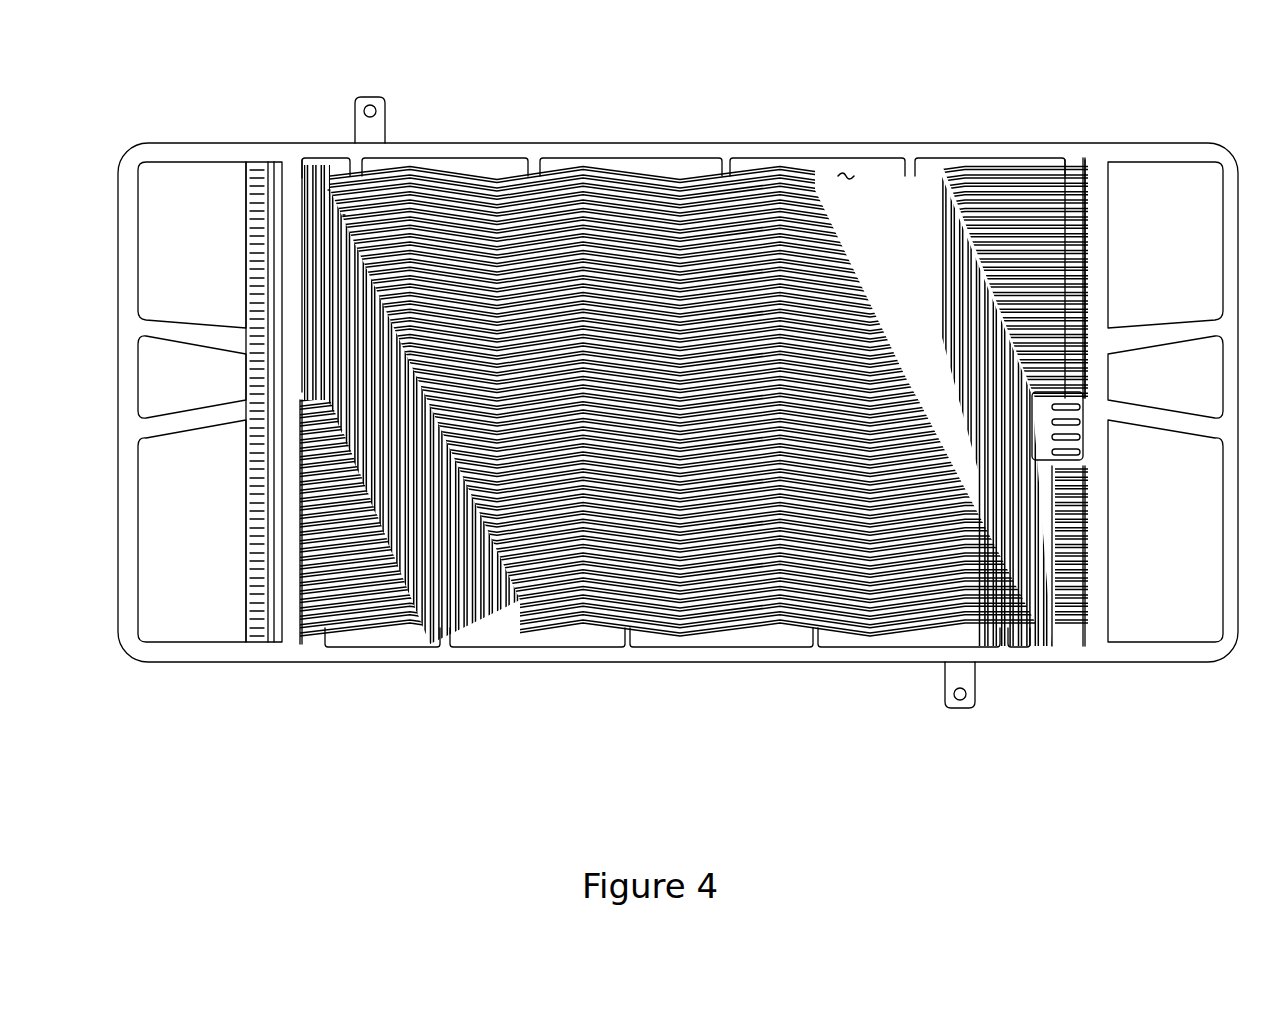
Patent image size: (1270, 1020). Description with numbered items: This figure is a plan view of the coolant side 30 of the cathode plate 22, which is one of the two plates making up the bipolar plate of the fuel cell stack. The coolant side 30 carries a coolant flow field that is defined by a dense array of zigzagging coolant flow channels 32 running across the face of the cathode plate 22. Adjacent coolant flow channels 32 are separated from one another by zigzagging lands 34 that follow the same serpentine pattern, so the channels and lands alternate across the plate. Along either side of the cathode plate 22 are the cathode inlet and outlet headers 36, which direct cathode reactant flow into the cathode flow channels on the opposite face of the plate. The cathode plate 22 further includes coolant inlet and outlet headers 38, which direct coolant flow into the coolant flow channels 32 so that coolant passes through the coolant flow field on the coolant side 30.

The cathode plate 22 is at (985, 143).
The coolant side 30 is at (848, 172).
The coolant flow channels 32 is at (475, 190).
The lands 34 is at (507, 612).
The cathode inlet and outlet headers 36 is at (1085, 250).
The coolant inlet and outlet headers 38 is at (246, 250).